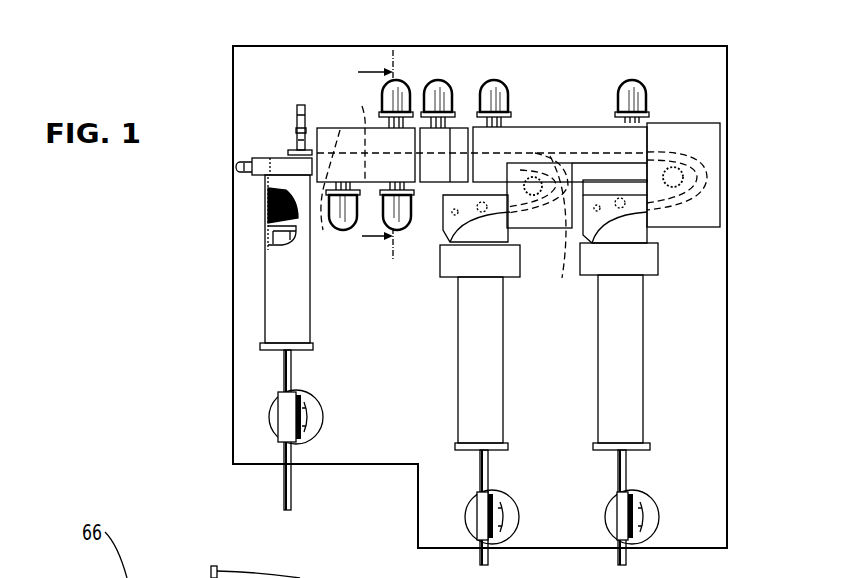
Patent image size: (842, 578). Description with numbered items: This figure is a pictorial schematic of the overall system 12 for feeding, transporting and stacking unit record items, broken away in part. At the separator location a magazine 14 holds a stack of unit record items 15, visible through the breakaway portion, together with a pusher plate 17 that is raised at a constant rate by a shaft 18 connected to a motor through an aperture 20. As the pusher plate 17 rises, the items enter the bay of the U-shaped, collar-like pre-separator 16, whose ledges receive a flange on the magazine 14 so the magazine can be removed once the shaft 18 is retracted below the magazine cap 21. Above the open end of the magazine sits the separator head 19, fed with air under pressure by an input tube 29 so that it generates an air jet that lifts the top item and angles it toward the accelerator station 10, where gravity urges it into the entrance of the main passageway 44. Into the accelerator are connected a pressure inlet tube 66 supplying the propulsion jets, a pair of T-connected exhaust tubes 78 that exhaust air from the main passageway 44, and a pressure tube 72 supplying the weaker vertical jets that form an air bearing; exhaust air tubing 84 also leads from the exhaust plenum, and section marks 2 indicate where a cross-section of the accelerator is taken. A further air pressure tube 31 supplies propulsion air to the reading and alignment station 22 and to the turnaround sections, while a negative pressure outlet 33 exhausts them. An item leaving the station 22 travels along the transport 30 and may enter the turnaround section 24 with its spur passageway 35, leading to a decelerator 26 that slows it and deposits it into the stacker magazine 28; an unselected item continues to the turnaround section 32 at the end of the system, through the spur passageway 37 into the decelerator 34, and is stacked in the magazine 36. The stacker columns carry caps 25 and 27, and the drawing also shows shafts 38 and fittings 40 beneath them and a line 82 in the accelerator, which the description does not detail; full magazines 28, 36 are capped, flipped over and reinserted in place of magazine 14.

The overall system 12 is at (216, 85).
The section line 2- 2 is at (375, 155).
The accelerator station 10 is at (348, 128).
The passage 82 is at (362, 132).
The main passageway 44 is at (330, 196).
The pressure inlet tube 66 is at (405, 88).
The exhaust tubes 78 is at (447, 82).
The reading and alignment station 22 is at (452, 127).
The air pressure tube 31 is at (508, 95).
The exhaust outlet 33 is at (648, 93).
The bar 30 is at (586, 127).
The turnaround section 32 is at (720, 205).
The spur passageway 37 is at (700, 178).
The turnaround section 24 is at (556, 232).
The spur passageway 35 is at (557, 231).
The decelerator 34 is at (605, 225).
The decelerator 26 is at (440, 227).
The pressure tube 72 is at (409, 226).
The exhaust air tubing 84 is at (348, 232).
The input tube 29 is at (299, 103).
The separator head 19 is at (296, 152).
The pre-separator 16 is at (262, 158).
The unit record items 15 is at (268, 200).
The pusher plate 17 is at (268, 230).
The magazine 14 is at (265, 287).
The magazine cap 21 is at (313, 346).
The shaft 18 is at (283, 372).
The aperture 20 is at (268, 420).
The magazine 28 is at (458, 395).
The magazine 36 is at (598, 390).
The cap 25 is at (510, 448).
The cap 27 is at (650, 448).
The rod 38 is at (617, 470).
The ball joint 40 is at (605, 515).